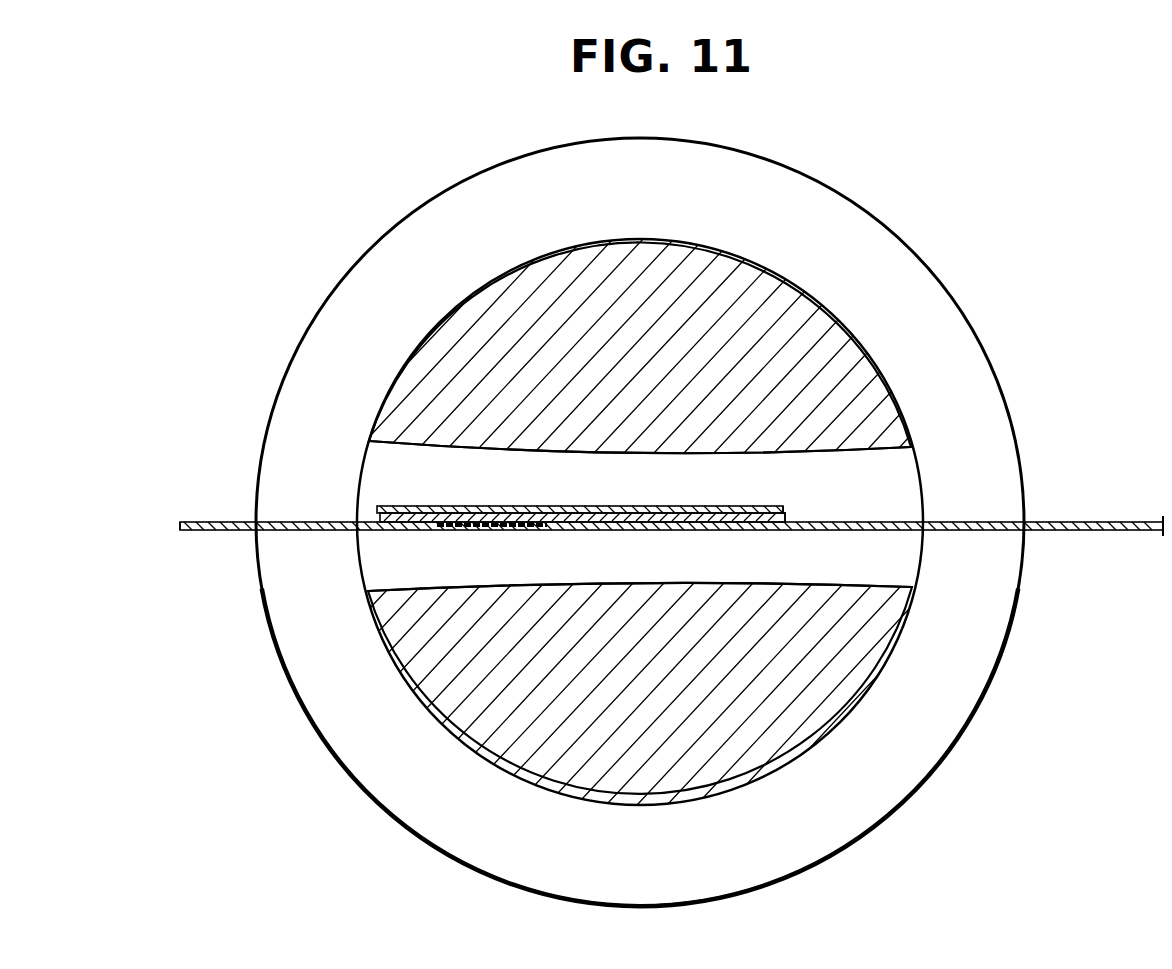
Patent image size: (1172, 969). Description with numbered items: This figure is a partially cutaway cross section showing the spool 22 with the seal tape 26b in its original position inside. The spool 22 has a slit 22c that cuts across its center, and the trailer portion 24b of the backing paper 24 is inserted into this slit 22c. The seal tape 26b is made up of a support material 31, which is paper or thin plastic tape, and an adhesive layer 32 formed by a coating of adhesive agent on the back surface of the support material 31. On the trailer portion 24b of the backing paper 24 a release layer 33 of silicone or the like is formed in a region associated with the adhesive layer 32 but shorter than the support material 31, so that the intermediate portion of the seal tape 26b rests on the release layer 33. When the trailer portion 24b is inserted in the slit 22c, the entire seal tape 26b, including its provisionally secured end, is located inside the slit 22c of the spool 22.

The spool 22 is at (925, 245).
The slit 22c is at (888, 563).
The backing paper 24 is at (1090, 533).
The trailer portion 24b is at (204, 520).
The seal tape 26b is at (790, 498).
The support material 31 is at (425, 505).
The adhesive layer 32 is at (785, 520).
The release layer 33 is at (462, 531).